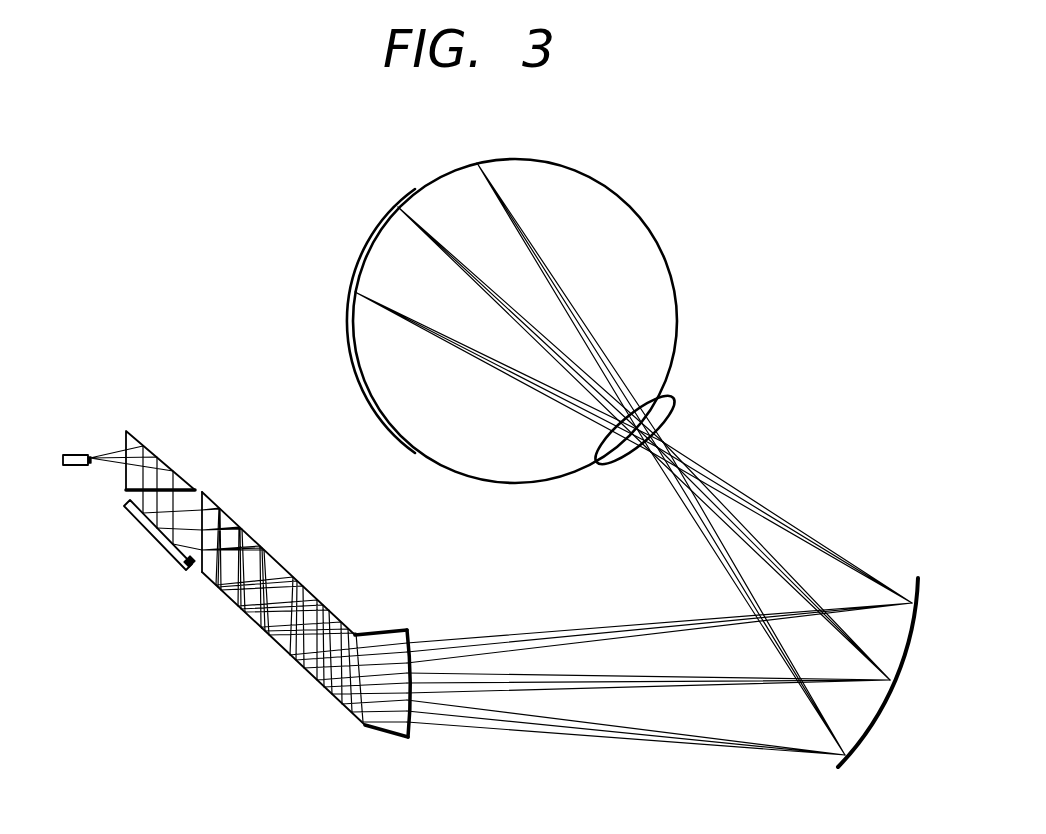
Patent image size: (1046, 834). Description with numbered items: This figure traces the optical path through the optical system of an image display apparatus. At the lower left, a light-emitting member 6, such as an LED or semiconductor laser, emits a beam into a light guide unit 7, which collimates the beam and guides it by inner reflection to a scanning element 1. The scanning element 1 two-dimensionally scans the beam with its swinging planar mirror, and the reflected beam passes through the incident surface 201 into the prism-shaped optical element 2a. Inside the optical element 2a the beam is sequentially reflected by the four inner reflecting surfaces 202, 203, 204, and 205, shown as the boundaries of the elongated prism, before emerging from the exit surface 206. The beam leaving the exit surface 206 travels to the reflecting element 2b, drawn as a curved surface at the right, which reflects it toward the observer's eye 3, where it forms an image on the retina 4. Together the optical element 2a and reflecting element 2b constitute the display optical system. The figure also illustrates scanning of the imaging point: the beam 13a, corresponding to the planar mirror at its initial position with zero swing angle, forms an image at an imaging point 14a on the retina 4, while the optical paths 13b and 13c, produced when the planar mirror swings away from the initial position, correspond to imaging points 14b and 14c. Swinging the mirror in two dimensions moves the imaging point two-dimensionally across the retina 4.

The scanning element 1 is at (142, 525).
The prism-shaped optical element 2a is at (309, 637).
The reflecting element 2b is at (872, 722).
The observer's eye 3 is at (666, 263).
The retina 4 is at (377, 237).
The light-emitting member 6 is at (75, 455).
The light guide unit 7 is at (157, 447).
The beam 13a is at (556, 352).
The optical path 13b is at (596, 347).
The optical path 13c is at (733, 495).
The imaging point 14a is at (398, 207).
The imaging point 14b is at (477, 163).
The imaging point 14c is at (355, 292).
The incident surface 201 is at (197, 566).
The inner reflecting surface 202 is at (265, 550).
The inner reflecting surface 203 is at (226, 596).
The inner reflecting surface 204 is at (328, 610).
The inner reflecting surface 205 is at (300, 665).
The exit surface 206 is at (410, 738).